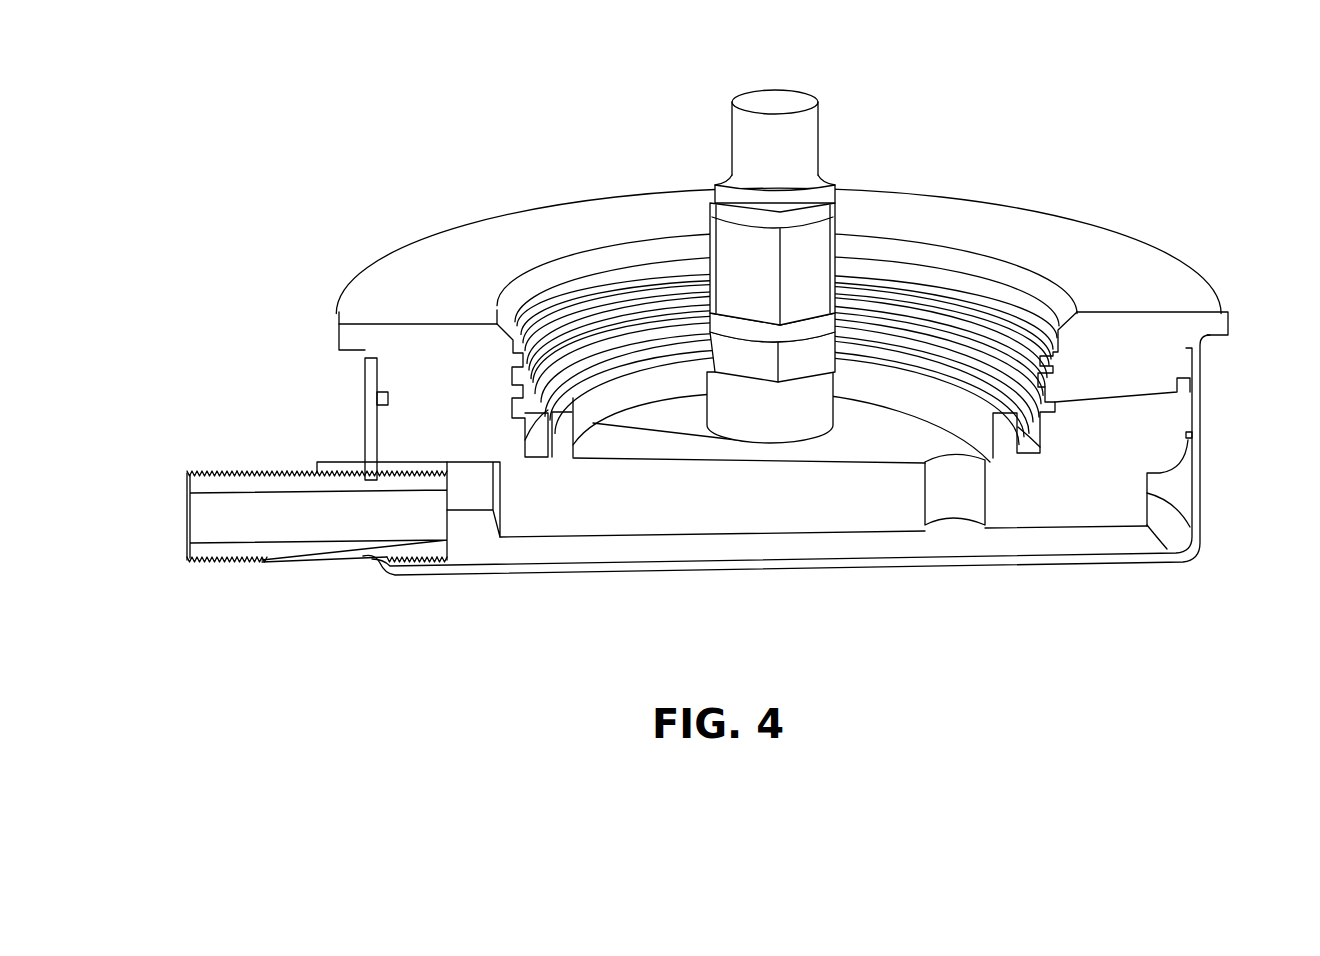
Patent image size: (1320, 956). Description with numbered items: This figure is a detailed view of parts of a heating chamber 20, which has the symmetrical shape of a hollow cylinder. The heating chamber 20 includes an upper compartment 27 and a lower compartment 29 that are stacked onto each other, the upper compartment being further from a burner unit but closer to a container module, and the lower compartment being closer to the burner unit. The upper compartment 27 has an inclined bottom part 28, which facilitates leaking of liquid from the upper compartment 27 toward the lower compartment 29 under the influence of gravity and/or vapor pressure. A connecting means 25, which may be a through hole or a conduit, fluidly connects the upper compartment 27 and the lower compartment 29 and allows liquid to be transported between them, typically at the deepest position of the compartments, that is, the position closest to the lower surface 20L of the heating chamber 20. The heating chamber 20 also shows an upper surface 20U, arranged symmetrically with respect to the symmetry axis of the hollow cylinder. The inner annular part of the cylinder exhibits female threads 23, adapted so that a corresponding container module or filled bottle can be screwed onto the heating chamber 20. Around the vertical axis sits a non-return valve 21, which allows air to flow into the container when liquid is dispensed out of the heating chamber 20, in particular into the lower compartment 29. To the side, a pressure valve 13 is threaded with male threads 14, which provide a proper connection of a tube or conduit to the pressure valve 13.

The heating chamber 20 is at (478, 28).
The upper surface 20U is at (392, 278).
The lower surface 20L is at (1077, 563).
The non-return valve 21 is at (808, 133).
The female threads 23 is at (980, 310).
The connecting means 25 is at (955, 503).
The upper compartment 27 is at (890, 410).
The inclined bottom part 28 is at (632, 447).
The lower compartment 29 is at (680, 550).
The pressure valve 13 is at (308, 563).
The male threads 14 is at (222, 473).